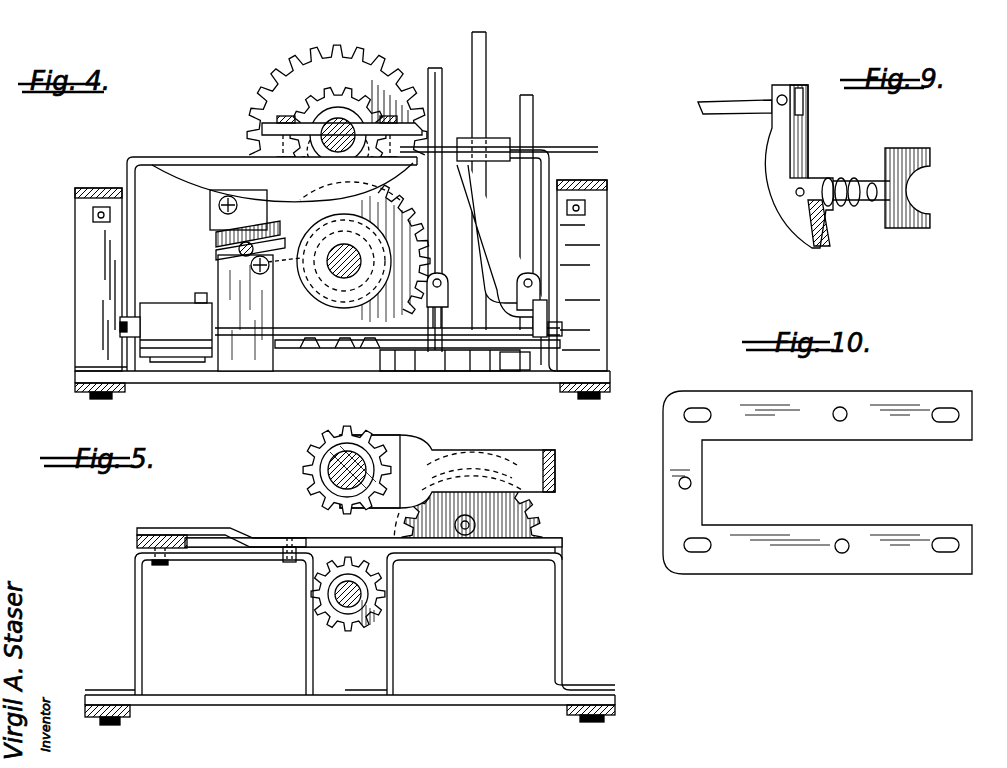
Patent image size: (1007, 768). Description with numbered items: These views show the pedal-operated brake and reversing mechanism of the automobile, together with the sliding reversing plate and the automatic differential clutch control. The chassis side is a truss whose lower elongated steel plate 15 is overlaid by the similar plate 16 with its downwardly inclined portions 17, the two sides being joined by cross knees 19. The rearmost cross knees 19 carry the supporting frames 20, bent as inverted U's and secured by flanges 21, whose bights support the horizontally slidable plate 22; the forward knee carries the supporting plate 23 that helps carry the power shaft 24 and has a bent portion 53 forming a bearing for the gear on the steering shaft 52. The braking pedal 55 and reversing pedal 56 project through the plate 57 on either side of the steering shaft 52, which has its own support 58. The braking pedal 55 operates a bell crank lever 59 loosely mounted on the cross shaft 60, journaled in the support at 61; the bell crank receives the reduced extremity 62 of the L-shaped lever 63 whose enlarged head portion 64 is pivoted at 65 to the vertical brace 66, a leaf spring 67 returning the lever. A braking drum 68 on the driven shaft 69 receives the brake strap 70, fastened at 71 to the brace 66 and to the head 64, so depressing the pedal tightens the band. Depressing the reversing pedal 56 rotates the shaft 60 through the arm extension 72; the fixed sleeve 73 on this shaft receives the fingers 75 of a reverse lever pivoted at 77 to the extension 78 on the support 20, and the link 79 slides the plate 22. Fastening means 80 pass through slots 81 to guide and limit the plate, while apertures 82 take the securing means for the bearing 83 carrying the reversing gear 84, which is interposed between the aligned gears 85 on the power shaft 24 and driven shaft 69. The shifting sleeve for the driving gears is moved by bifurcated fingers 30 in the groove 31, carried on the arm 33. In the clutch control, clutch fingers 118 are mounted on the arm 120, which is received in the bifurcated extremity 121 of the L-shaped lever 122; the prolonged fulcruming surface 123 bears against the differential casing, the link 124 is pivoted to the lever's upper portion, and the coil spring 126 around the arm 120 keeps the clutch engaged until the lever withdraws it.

In FIG. 4, the lower elongated steel plate 15 is at (85, 386).
In FIG. 5, the lower elongated steel plate 15 is at (130, 726).
In FIG. 4, the similar plate 16 is at (95, 188).
In FIG. 4, the downwardly inclined portions 17 is at (80, 242).
In FIG. 4, the cross knees 19 is at (303, 371).
In FIG. 5, the cross knees 19 is at (225, 695).
In FIG. 5, the supporting frames 20 is at (147, 600).
In FIG. 4, the terminal and intermediate flanges 21 is at (88, 367).
In FIG. 5, the terminal and intermediate flanges 21 is at (125, 688).
In FIG. 5, the horizontally slidable plate 22 is at (310, 538).
In FIG. 10, the horizontally slidable plate 22 is at (700, 460).
In FIG. 4, the supporting plate 23 is at (148, 157).
In FIG. 4, the power shaft 24 is at (342, 139).
In FIG. 5, the power shaft 24 is at (328, 460).
In FIG. 5, the bifurcated fingers 30 is at (372, 435).
In FIG. 5, the groove 31 is at (320, 476).
In FIG. 5, the arm 33 is at (512, 450).
In FIG. 4, the steering shaft 52 is at (478, 290).
In FIG. 4, the bent portion 53 is at (470, 371).
In FIG. 4, the braking pedal 55 is at (530, 98).
In FIG. 4, the reversing pedal 56 is at (436, 67).
In FIG. 4, the plate 57 is at (550, 152).
In FIG. 4, the separate support 58 is at (468, 140).
In FIG. 4, the bell crank lever 59 is at (548, 282).
In FIG. 4, the cross shaft 60 is at (338, 330).
In FIG. 4, the journals 61 is at (125, 320).
In FIG. 4, the reduced extremity 62 is at (553, 305).
In FIG. 4, the L-shaped lever 63 is at (490, 262).
In FIG. 4, the enlarged head portion 64 is at (215, 230).
In FIG. 4, the pivot point 65 is at (219, 205).
In FIG. 4, the vertical brace 66 is at (235, 358).
In FIG. 4, the leaf spring 67 is at (178, 166).
In FIG. 4, the braking drum 68 is at (344, 261).
In FIG. 4, the driven shaft 69 is at (350, 245).
In FIG. 5, the driven shaft 69 is at (335, 594).
In FIG. 4, the brake strap 70 is at (264, 259).
In FIG. 4, the securing point 71 is at (242, 252).
In FIG. 4, the arm extension 72 is at (444, 312).
In FIG. 4, the fixed sleeve 73 is at (172, 340).
In FIG. 4, the fingers 75 is at (196, 298).
In FIG. 5, the pivot point 77 is at (160, 532).
In FIG. 5, the extension 78 is at (137, 542).
In FIG. 5, the link 79 is at (202, 528).
In FIG. 5, the fastening means 80 is at (288, 562).
In FIG. 10, the slots 81 is at (702, 408).
In FIG. 10, the apertures 82 is at (843, 407).
In FIG. 5, the bearing 83 is at (530, 520).
In FIG. 5, the reversing gear 84 is at (470, 598).
In FIG. 5, the gears 85 is at (385, 462).
In FIG. 9, the clutch fingers 118 is at (946, 210).
In FIG. 9, the arm 120 is at (850, 180).
In FIG. 9, the bifurcated extremity 121 is at (797, 185).
In FIG. 9, the L-shaped lever 122 is at (778, 143).
In FIG. 9, the fulcruming surface 123 is at (814, 228).
In FIG. 9, the link 124 is at (736, 100).
In FIG. 9, the coil spring 126 is at (846, 208).